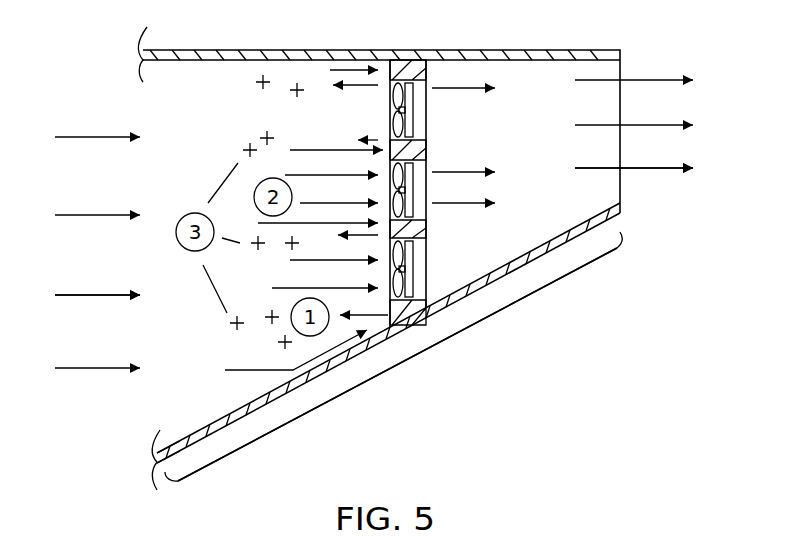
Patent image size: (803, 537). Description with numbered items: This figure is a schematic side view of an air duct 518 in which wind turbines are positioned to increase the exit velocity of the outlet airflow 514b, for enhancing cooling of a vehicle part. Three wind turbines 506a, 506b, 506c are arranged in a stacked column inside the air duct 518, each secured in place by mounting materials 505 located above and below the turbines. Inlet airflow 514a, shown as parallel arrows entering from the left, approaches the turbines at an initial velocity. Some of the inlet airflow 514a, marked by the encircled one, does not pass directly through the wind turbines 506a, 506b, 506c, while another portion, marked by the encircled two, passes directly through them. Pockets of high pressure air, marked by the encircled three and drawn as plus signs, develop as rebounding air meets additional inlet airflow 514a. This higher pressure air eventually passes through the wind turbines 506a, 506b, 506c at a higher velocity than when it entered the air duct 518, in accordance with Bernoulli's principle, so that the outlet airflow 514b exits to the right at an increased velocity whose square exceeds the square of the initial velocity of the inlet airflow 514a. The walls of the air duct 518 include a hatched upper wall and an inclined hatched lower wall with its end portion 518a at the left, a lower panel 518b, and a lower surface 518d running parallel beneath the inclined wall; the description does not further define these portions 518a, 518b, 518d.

The mounting materials 505 is at (407, 70).
The wind turbine 506a is at (410, 120).
The wind turbine 506b is at (410, 200).
The wind turbine 506c is at (410, 268).
The inlet airflow 514a is at (87, 297).
The outlet airflow 514b is at (645, 170).
The air duct 518 is at (288, 393).
The plate end portion 518a is at (152, 462).
The plate lower panel 518b is at (413, 352).
The plate lower surface 518d is at (413, 326).